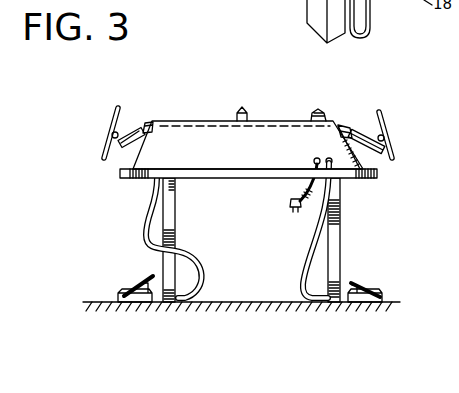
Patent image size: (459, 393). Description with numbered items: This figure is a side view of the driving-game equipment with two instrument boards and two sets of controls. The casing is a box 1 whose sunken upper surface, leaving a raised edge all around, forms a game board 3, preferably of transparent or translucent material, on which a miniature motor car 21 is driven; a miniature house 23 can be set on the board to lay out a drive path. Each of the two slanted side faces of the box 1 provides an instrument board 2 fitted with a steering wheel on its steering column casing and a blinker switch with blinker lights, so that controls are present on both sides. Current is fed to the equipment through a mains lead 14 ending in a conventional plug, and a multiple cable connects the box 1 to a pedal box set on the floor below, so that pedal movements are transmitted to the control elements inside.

The box 1 is at (193, 97).
The instrument board 2 is at (133, 162).
The game board 3 is at (264, 122).
The mains lead 14 is at (291, 201).
The miniature motor car 21 is at (318, 106).
The miniature houses 23 is at (247, 88).